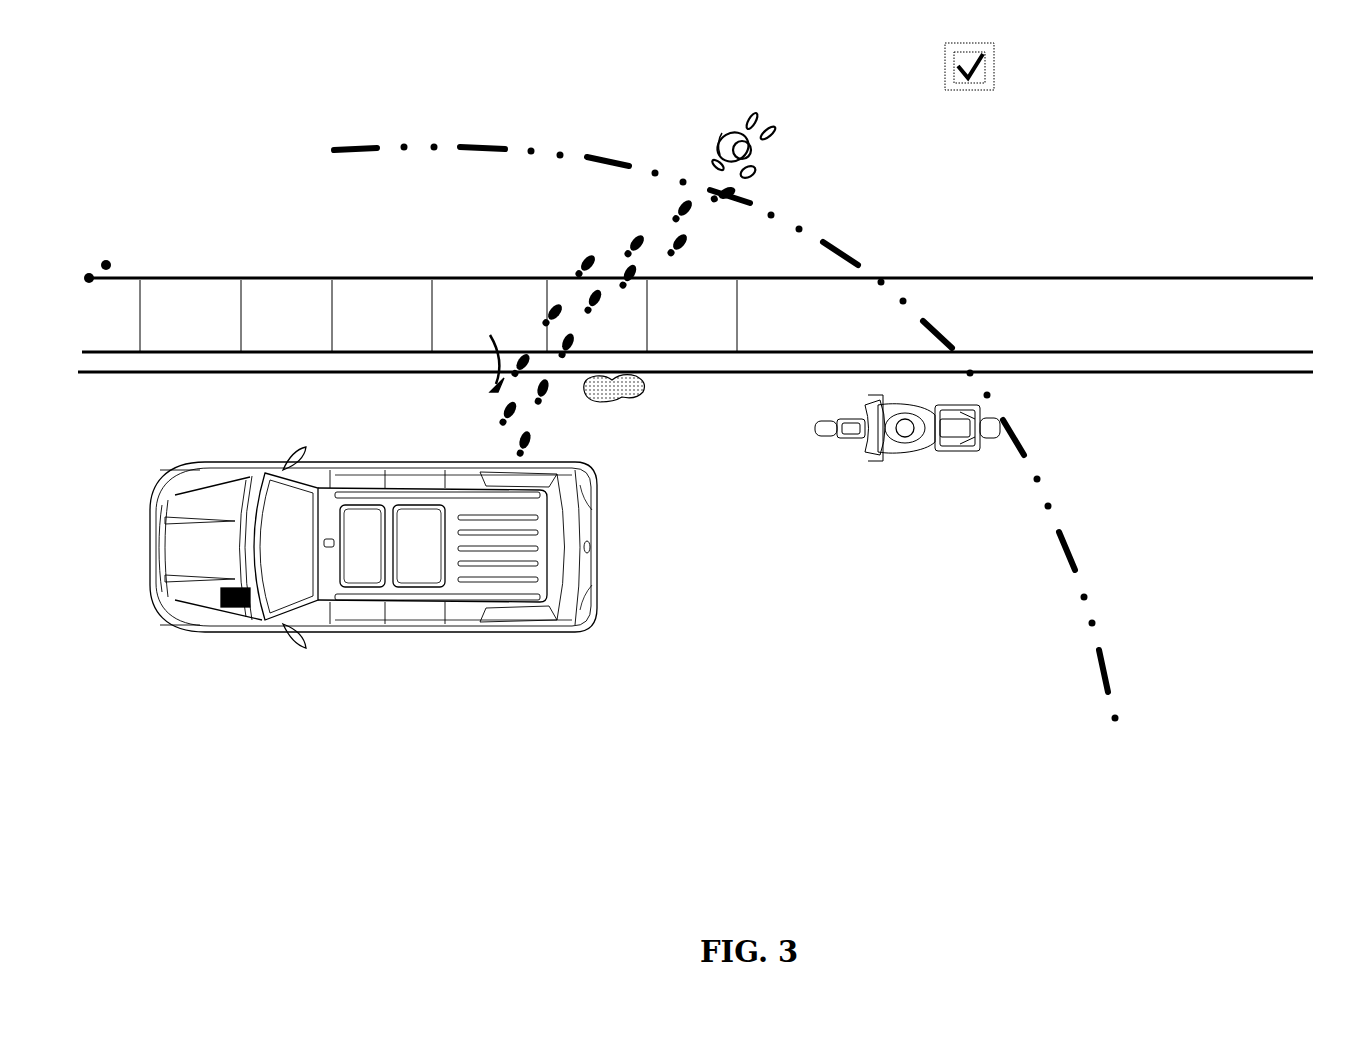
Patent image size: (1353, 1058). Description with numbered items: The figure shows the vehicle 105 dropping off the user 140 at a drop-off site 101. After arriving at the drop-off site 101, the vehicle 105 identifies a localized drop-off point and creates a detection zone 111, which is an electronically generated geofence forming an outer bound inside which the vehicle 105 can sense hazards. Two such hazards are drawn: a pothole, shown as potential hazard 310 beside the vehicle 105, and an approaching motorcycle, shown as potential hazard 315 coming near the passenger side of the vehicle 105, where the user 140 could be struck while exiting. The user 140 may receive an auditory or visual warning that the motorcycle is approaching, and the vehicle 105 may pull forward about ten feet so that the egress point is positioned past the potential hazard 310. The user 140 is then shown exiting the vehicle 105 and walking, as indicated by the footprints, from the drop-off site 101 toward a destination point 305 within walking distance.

The drop-off site 101 is at (472, 354).
The vehicle 105 is at (593, 585).
The detection zone 111 is at (1076, 562).
The user 140 is at (722, 132).
The destination point 305 is at (945, 68).
The potential hazard 310 is at (612, 400).
The potential hazard 315 is at (905, 420).